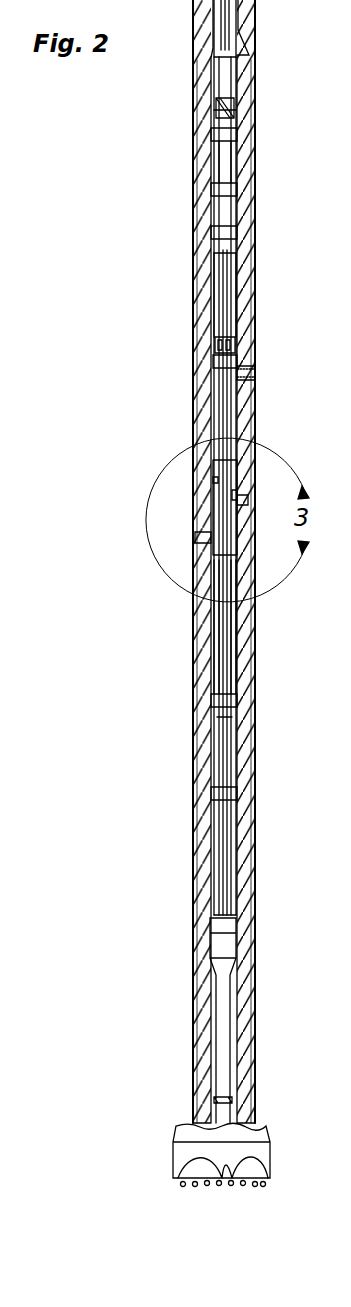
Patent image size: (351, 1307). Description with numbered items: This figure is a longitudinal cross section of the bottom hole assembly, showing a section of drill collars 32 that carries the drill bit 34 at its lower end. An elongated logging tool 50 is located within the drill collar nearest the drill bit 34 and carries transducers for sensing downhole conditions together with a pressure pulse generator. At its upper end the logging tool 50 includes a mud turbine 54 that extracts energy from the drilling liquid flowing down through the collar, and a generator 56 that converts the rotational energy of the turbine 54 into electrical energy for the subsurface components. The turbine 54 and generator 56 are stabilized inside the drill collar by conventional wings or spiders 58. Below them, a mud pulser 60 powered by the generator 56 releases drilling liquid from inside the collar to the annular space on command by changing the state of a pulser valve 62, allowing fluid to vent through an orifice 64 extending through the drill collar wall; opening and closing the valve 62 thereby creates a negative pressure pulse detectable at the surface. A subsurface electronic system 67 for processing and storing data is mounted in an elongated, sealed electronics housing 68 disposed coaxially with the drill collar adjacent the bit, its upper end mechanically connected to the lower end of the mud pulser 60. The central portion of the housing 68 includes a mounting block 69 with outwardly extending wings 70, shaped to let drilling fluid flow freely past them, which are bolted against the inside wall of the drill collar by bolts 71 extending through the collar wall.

The drill collars 32 is at (196, 12).
The drill bit 34 is at (192, 1135).
The logging tool 50 is at (214, 860).
The mud turbine 54 is at (219, 104).
The generator 56 is at (222, 162).
The wings or spiders 58 is at (213, 134).
The mud pulser 60 is at (220, 332).
The pulser valve 62 is at (222, 362).
The orifice 64 is at (251, 371).
The subsurface electronic system 67 is at (223, 615).
The electronics housing 68 is at (215, 291).
The mounting block 69 is at (224, 500).
The wings 70 is at (216, 478).
The bolts 71 is at (200, 538).